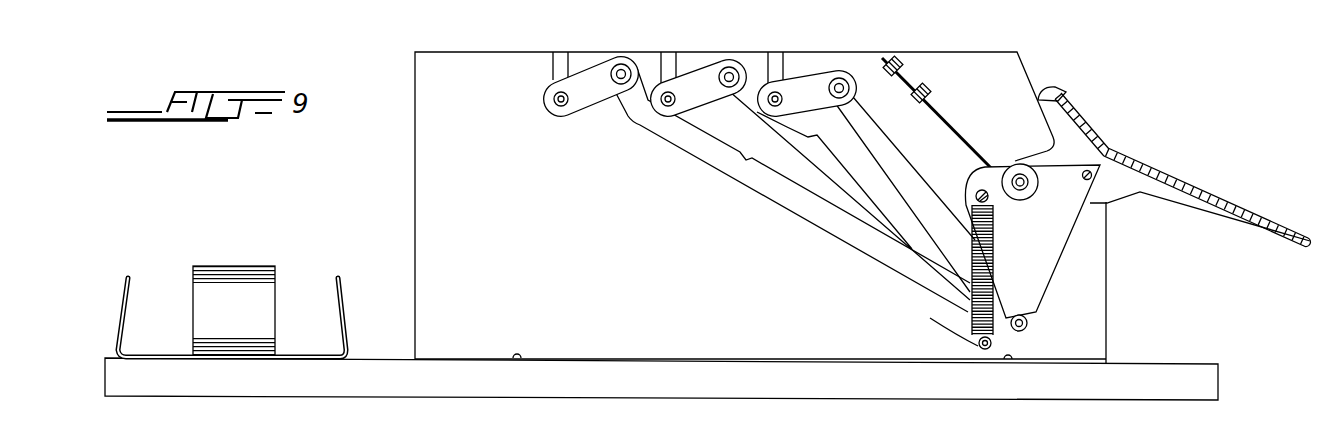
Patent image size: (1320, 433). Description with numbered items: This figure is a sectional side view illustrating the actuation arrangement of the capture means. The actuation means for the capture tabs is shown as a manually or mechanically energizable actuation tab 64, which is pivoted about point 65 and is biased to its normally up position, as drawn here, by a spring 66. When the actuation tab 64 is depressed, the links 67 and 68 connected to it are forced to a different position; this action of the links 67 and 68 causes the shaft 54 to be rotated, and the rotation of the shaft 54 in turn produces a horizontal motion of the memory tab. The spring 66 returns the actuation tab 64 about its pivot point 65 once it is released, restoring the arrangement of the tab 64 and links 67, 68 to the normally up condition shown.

The shaft 54 is at (650, 117).
The actuation tab 64 is at (1165, 192).
The pivot point 65 is at (1100, 163).
The spring 66 is at (972, 316).
The link 67 is at (857, 103).
The link 68 is at (714, 74).